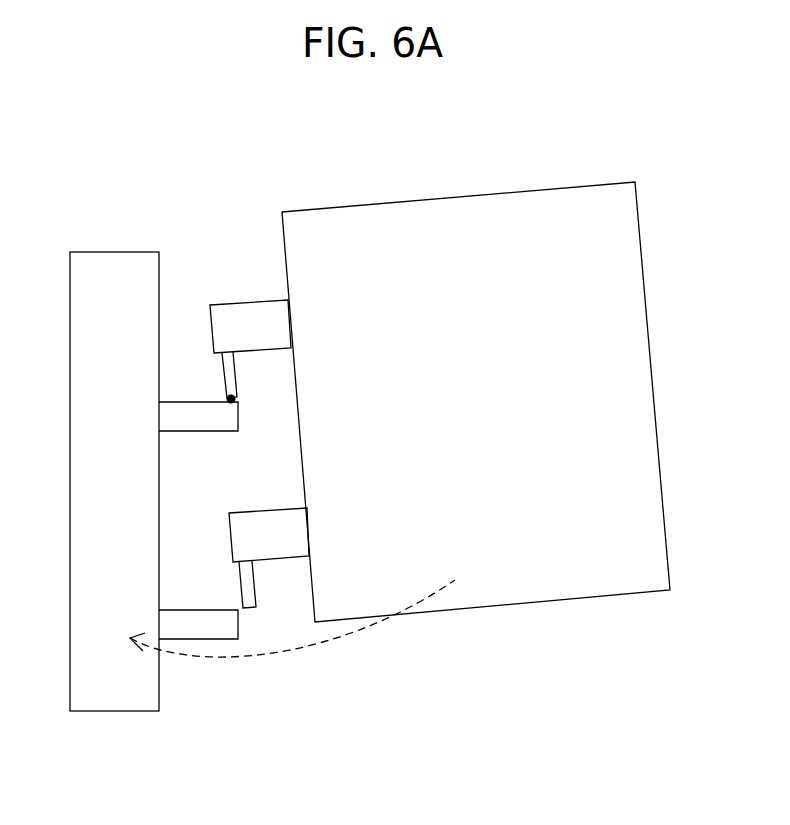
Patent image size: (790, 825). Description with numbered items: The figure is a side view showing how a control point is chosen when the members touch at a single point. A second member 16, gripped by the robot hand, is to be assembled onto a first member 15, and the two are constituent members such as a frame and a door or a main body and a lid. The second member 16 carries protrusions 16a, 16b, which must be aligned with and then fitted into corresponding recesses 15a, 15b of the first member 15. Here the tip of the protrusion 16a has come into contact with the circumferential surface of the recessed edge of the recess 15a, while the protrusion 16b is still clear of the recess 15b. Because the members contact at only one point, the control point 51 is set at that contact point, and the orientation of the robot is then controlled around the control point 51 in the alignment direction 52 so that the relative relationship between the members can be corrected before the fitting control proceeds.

The first member 15 is at (117, 265).
The recess 15a is at (180, 418).
The recess 15b is at (207, 623).
The second member 16 is at (422, 238).
The protrusion 16a is at (248, 317).
The protrusion 16b is at (270, 530).
The control point 51 is at (236, 395).
The alignment direction 52 is at (288, 655).